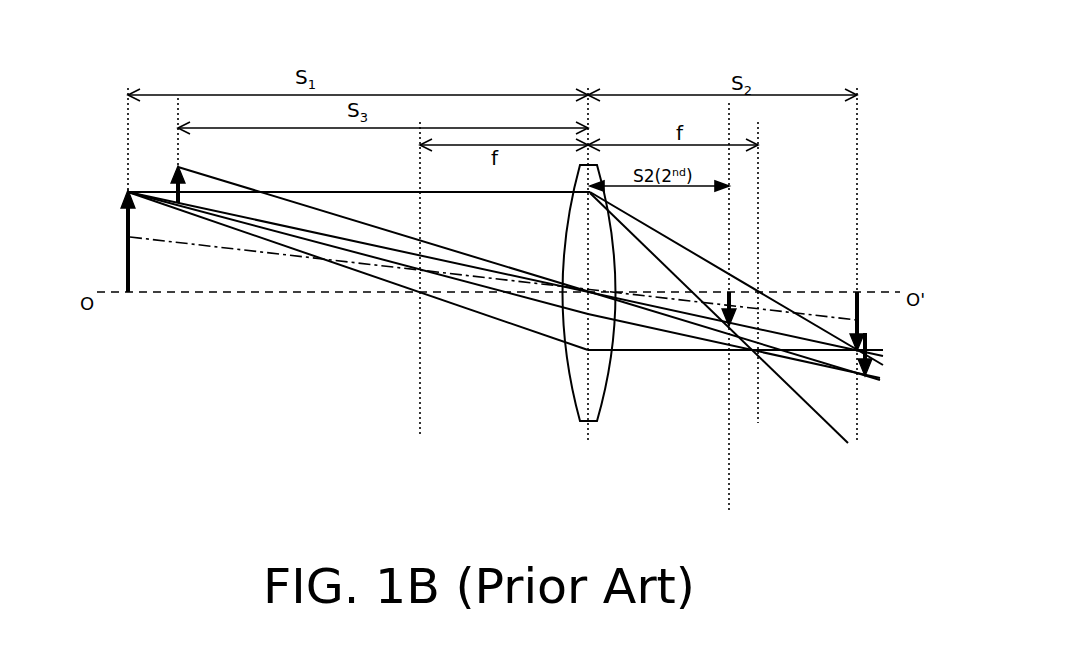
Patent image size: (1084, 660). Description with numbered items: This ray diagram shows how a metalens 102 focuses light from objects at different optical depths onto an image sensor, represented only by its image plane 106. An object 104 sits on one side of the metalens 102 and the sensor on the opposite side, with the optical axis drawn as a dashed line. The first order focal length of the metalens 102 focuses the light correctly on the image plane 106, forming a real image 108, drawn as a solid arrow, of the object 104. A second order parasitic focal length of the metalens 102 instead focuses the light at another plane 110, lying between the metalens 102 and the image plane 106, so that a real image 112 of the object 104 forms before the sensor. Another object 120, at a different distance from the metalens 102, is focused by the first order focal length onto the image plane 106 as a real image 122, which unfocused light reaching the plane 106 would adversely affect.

The metalens 102 is at (566, 307).
The object 104 is at (111, 271).
The image plane 106 is at (881, 265).
The real image 108 is at (894, 321).
The another plane 110 is at (693, 306).
The real image 112 is at (769, 278).
The another object 120 is at (160, 165).
The real image 122 is at (886, 383).